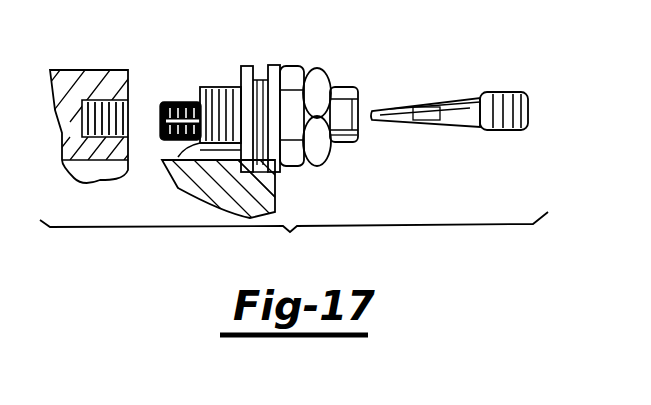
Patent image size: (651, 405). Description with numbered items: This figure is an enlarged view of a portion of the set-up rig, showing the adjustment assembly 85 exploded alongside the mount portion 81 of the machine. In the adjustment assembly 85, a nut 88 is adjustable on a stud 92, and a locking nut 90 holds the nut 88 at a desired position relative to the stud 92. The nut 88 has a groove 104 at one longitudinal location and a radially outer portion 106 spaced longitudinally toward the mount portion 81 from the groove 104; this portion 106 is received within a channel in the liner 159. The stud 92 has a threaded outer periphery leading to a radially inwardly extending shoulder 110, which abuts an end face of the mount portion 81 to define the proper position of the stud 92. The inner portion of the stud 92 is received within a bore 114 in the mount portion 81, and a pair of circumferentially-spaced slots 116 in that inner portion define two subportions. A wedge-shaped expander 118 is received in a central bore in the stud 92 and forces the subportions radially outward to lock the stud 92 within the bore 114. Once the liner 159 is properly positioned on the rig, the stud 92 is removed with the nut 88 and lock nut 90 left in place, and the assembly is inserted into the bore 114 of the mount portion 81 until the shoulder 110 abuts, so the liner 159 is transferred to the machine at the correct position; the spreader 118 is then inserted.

The mount portion 81 is at (72, 80).
The bore 114 is at (110, 109).
The circumferentially-spaced slots 116 is at (182, 100).
The shoulder 110 is at (178, 157).
The liner 159 is at (262, 197).
The radially outer portion 106 is at (246, 66).
The groove 104 is at (257, 80).
The nut 88 is at (289, 72).
The locking nut 90 is at (323, 77).
The stud 92 is at (350, 146).
The wedge-shaped expander 118 is at (473, 100).
The adjustment assembly 85 is at (294, 240).